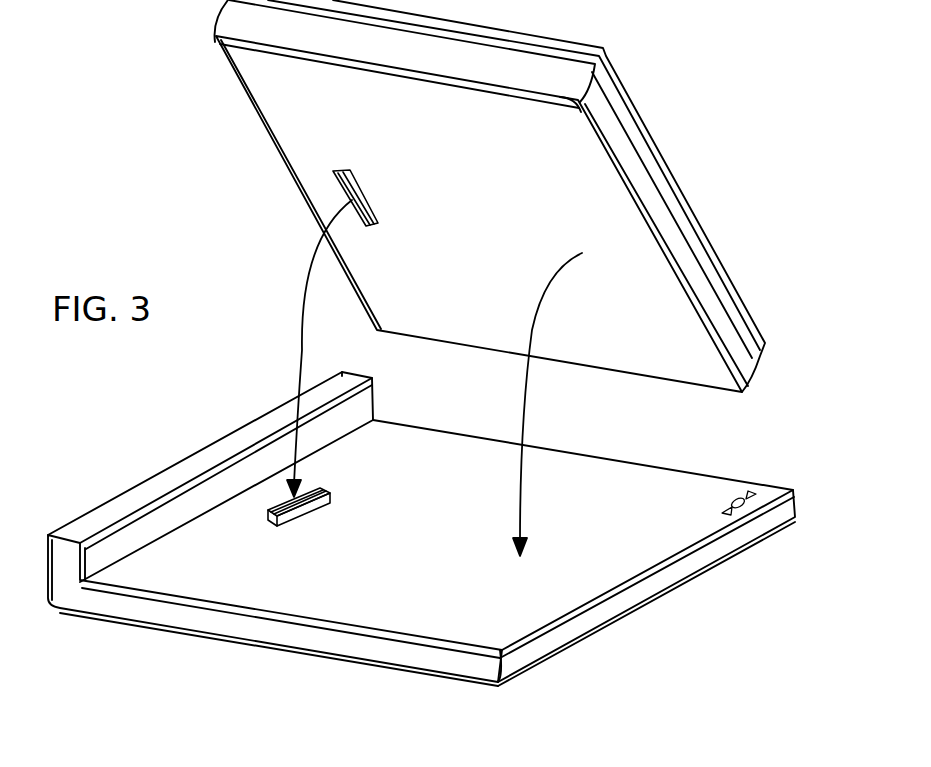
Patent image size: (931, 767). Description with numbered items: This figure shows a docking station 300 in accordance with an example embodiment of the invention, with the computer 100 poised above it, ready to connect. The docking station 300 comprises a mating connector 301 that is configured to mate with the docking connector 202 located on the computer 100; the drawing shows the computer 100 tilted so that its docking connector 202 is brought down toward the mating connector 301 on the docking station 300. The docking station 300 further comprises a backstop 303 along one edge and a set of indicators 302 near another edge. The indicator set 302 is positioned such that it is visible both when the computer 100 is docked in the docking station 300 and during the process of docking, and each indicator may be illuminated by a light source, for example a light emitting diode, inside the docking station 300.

The computer 100 is at (650, 140).
The docking connector 202 is at (362, 200).
The docking station 300 is at (238, 641).
The mating connector 301 is at (308, 512).
The set of indicators 302 is at (745, 509).
The backstop 303 is at (181, 470).